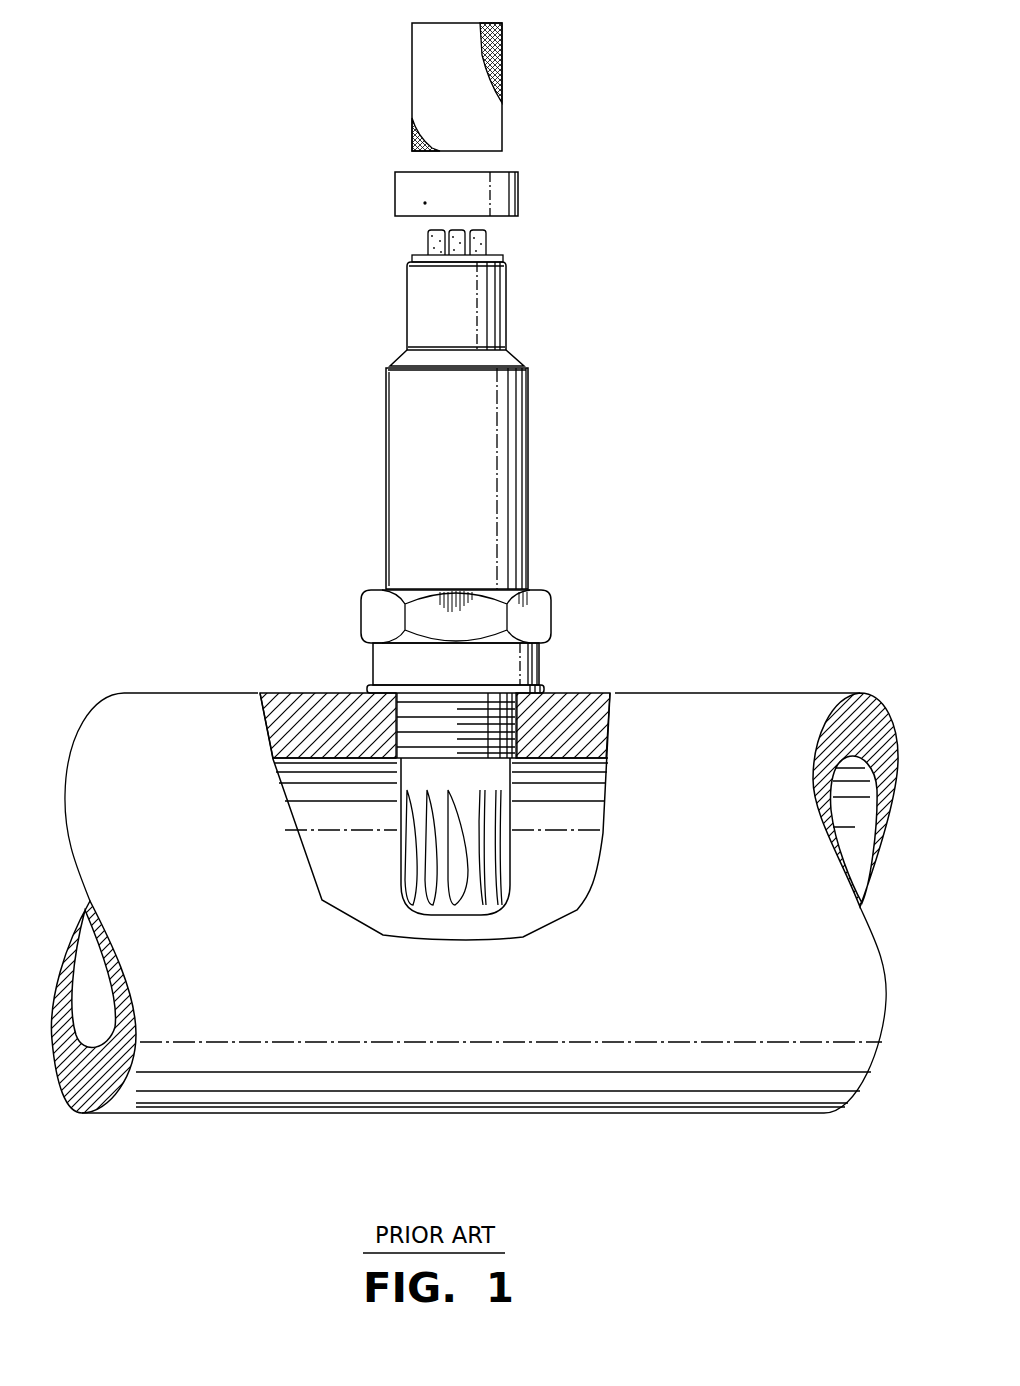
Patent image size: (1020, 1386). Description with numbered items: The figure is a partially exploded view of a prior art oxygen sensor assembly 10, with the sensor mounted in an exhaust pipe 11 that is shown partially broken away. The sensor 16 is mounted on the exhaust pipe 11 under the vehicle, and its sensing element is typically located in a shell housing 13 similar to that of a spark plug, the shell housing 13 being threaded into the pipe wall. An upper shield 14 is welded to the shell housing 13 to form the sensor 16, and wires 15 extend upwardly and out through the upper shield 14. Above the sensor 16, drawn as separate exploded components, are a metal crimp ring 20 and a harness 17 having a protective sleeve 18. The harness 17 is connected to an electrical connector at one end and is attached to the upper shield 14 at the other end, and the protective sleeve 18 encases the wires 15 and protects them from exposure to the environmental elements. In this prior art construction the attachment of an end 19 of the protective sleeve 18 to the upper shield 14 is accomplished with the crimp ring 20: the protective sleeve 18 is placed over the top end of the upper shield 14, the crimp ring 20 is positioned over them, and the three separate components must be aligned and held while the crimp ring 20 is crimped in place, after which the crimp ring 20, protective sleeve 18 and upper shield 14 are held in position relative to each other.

The oxygen sensor assembly 10 is at (229, 250).
The exhaust pipe 11 is at (185, 715).
The shell housing 13 is at (530, 662).
The upper shield 14 is at (513, 465).
The wires 15 is at (458, 233).
The sensor 16 is at (380, 478).
The harness 17 is at (515, 70).
The protective sleeve 18 is at (508, 103).
The end 19 is at (495, 134).
The crimp ring 20 is at (508, 192).